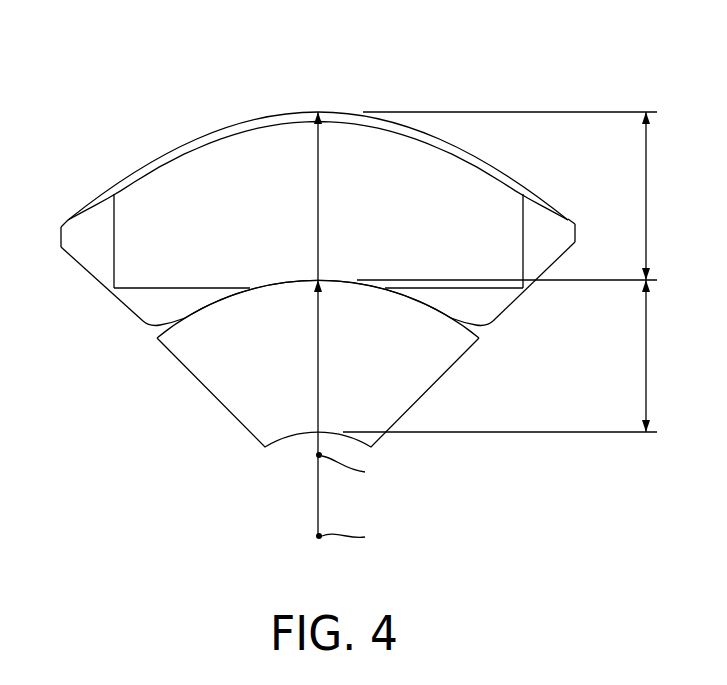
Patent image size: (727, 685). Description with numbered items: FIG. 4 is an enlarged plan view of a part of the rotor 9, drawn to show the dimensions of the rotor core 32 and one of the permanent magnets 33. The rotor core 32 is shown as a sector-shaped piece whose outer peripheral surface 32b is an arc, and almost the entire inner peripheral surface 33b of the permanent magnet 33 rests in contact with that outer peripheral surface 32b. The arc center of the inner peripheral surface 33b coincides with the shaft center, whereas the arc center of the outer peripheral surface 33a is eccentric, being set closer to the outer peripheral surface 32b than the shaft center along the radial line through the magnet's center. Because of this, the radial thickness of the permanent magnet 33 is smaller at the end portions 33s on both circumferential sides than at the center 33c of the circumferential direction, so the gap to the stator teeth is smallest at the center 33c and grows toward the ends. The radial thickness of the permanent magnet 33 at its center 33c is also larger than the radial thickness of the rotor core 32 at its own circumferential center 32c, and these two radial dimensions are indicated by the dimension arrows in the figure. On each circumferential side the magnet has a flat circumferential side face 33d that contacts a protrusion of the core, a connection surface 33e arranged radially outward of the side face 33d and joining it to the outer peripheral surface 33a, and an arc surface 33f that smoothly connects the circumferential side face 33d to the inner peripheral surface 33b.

The rotor 9 is at (535, 59).
The rotor core 32 is at (270, 375).
The outer peripheral surface of the rotor core 32b is at (212, 302).
The center of the rotor core in the circumferential direction 32c is at (317, 281).
The permanent magnet 33 is at (250, 145).
The outer peripheral surface 33a is at (218, 127).
The inner peripheral surface 33b is at (281, 288).
The center of the permanent magnet in the circumferential direction 33c is at (317, 112).
The circumferential side face 33d is at (89, 272).
The connection surface 33e is at (61, 238).
The arc surface 33f is at (144, 323).
The end portion 33s is at (68, 220).